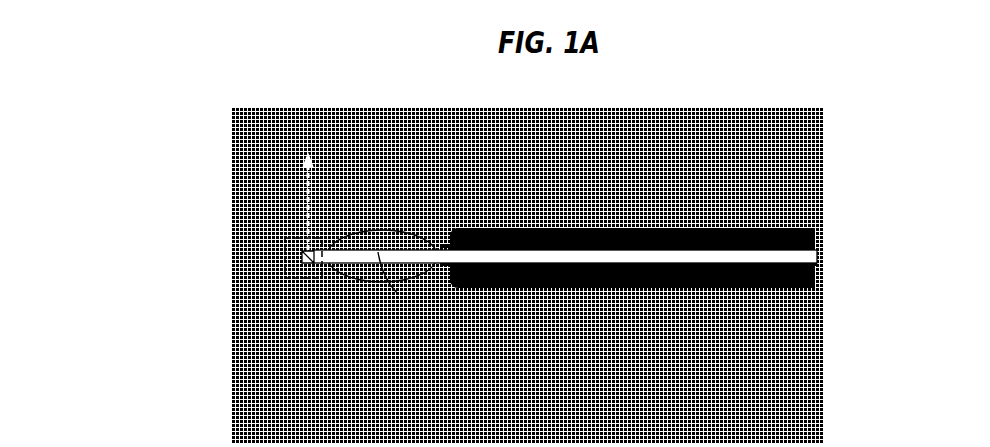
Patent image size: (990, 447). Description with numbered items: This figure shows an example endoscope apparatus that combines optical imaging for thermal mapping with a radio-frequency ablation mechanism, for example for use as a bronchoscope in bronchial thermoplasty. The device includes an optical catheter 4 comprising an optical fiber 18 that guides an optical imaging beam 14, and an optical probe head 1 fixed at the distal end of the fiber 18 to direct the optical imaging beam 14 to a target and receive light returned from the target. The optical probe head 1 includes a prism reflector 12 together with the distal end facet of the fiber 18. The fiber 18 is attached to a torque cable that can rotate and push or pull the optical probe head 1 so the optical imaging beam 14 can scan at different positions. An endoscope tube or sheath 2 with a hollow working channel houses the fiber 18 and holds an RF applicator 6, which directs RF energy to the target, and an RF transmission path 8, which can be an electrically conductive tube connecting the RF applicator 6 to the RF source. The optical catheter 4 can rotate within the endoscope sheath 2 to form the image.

The optical probe head 1 is at (283, 238).
The endoscope tube or sheath 2 is at (644, 230).
The optical catheter 4 is at (314, 266).
The RF applicator 6 is at (432, 276).
The RF transmission path 8 is at (818, 266).
The prism reflector 12 is at (302, 262).
The optical imaging beam 14 is at (377, 197).
The optical fiber 18 is at (400, 300).